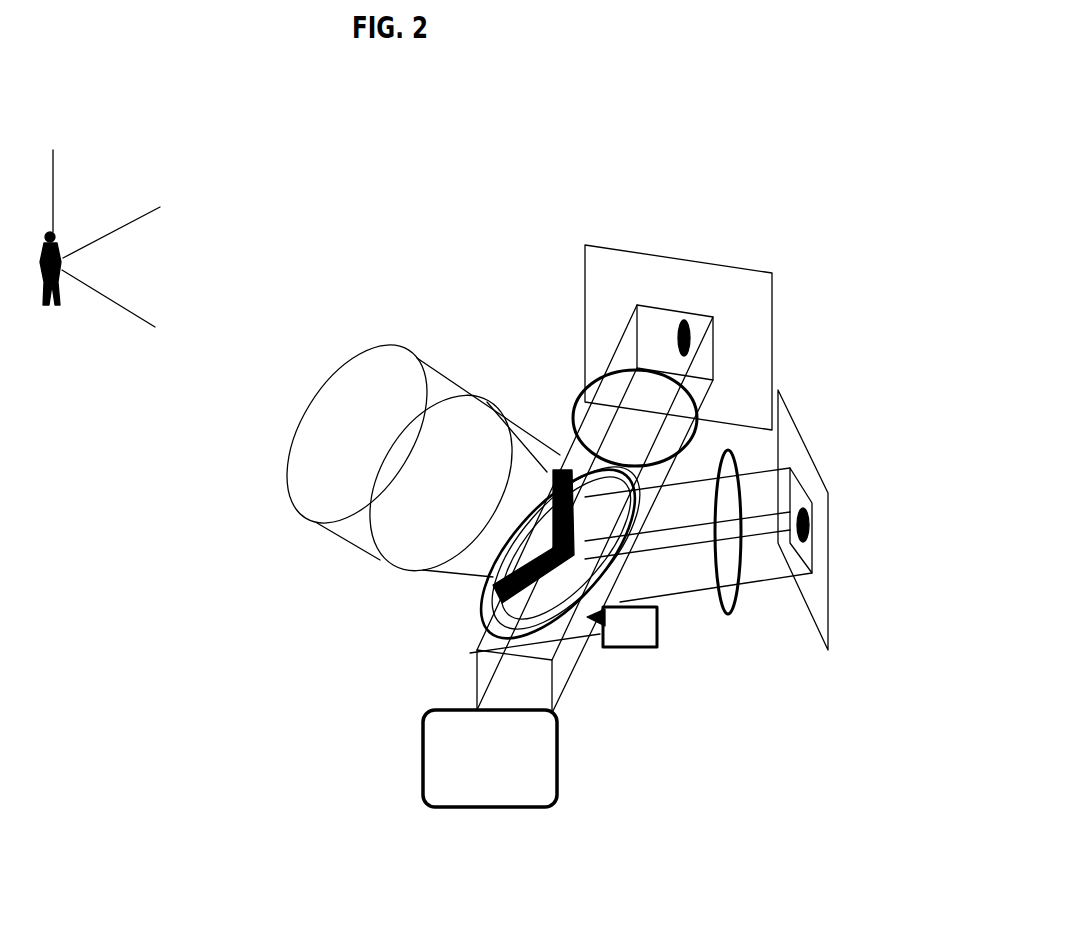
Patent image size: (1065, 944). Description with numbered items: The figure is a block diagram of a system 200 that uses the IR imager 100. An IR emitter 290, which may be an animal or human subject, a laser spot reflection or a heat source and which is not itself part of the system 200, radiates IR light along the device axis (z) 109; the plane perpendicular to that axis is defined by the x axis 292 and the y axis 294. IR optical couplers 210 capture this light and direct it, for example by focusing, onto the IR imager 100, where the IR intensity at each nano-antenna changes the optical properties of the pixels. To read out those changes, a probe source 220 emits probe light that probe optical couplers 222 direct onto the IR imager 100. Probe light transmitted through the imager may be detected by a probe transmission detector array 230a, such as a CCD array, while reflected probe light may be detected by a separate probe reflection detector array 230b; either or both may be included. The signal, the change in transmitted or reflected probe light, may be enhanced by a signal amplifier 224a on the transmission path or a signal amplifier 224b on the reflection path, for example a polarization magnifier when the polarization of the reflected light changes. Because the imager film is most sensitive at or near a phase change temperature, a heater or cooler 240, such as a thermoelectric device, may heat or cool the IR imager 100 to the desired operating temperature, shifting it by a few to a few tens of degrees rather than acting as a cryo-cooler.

The system 200 is at (580, 106).
The y axis 294 is at (46, 161).
The x axis 292 is at (134, 219).
The device axis (z) 109 is at (125, 310).
The IR emitter 290 is at (63, 247).
The probe transmission detector array 230a is at (690, 274).
The signal amplifier 224a is at (578, 405).
The IR optical couplers 210 is at (338, 533).
The IR imager 100 is at (495, 578).
The probe optical couplers 222 is at (477, 668).
The probe source 220 is at (490, 758).
The heater or cooler 240 is at (627, 637).
The signal amplifier 224b is at (733, 606).
The probe reflection detector array 230b is at (826, 604).